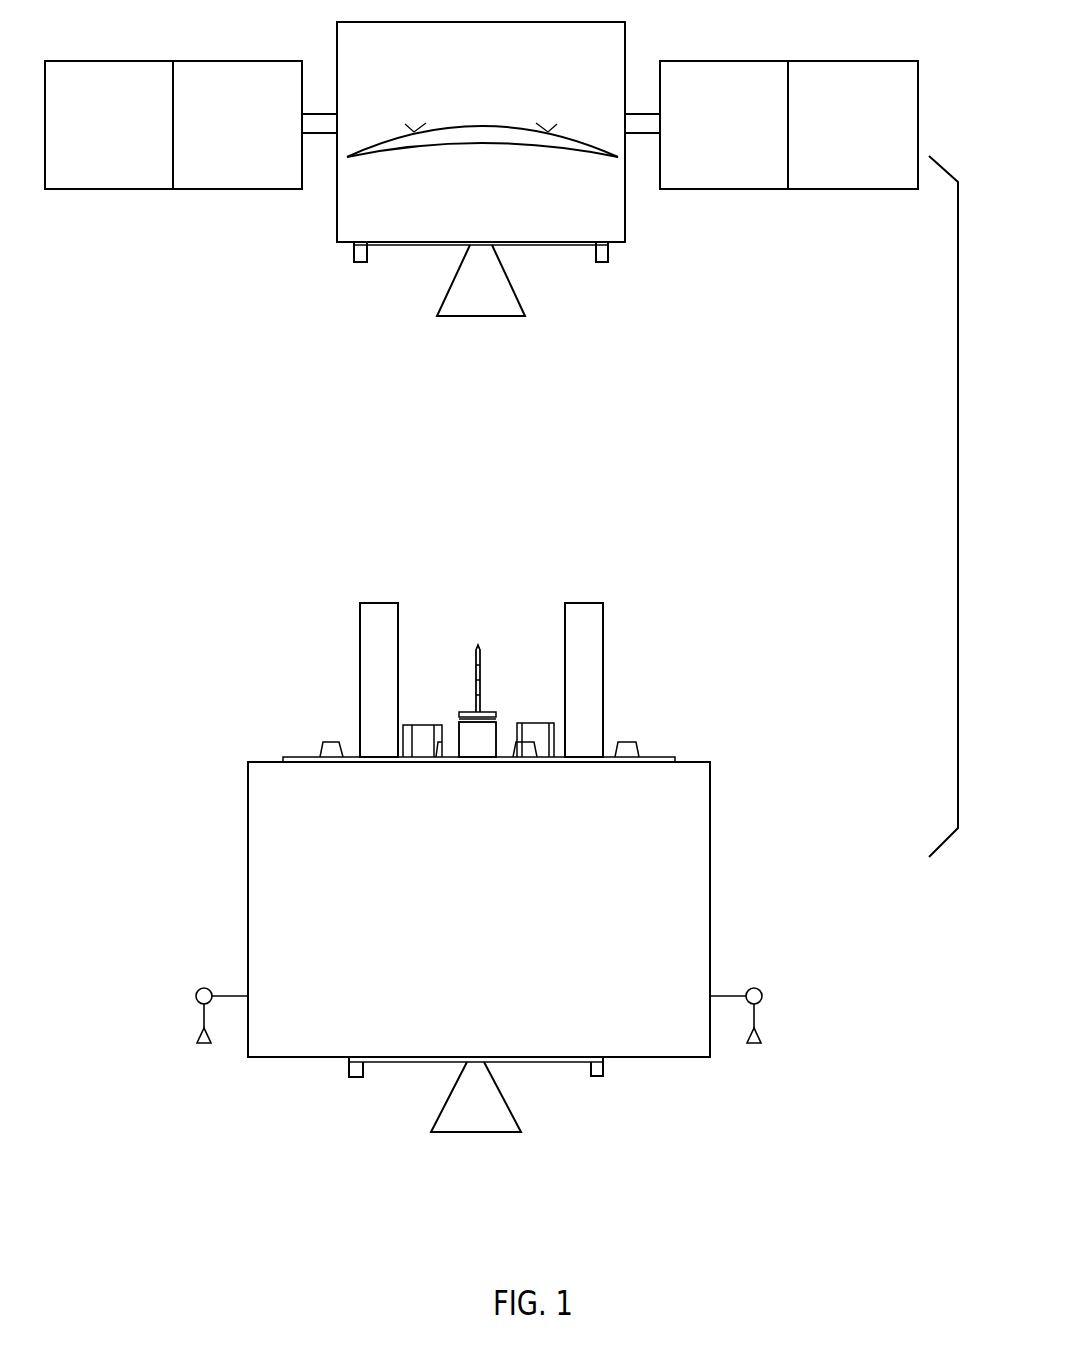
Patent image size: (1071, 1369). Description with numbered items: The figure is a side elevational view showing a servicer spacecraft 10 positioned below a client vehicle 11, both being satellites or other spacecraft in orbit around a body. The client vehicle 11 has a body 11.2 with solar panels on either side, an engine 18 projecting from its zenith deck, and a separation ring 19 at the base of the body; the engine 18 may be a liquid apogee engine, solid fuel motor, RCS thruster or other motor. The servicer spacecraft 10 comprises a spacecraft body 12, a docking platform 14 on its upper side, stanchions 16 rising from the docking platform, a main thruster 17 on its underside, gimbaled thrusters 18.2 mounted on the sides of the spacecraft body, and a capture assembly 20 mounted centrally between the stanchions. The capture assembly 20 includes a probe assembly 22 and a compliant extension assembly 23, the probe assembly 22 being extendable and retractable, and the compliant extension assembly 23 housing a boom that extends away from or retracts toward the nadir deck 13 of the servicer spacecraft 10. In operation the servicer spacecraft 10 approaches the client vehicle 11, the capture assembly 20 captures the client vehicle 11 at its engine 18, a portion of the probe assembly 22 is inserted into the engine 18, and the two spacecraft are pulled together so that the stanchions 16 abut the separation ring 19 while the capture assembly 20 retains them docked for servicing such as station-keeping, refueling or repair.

The servicer spacecraft 10 is at (700, 592).
The client vehicle 11 is at (613, 222).
The body 11.2 is at (352, 215).
The spacecraft body 12 is at (677, 895).
The nadir deck 13 is at (263, 760).
The docking platform 14 is at (300, 757).
The stanchions 16 is at (367, 627).
The main thruster 17 is at (505, 1119).
The engine 18 is at (508, 305).
The gimbaled thrusters 18.2 is at (203, 1013).
The separation ring 19 is at (602, 258).
The capture assembly 20 is at (503, 705).
The probe assembly 22 is at (473, 660).
The compliant extension assembly 23 is at (465, 730).